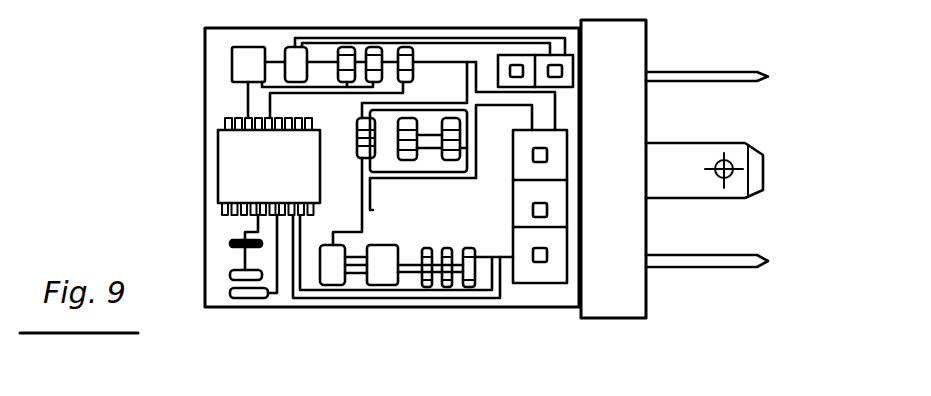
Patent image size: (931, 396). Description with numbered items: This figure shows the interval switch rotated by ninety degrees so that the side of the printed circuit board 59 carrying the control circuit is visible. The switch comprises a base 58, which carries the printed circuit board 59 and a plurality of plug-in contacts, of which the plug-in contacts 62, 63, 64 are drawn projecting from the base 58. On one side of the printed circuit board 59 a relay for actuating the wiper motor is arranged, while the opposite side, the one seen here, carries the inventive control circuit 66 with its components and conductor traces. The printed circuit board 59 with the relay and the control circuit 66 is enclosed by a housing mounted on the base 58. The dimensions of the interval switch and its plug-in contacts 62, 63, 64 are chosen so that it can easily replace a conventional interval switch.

The base 58 is at (603, 308).
The printed circuit board 59 is at (527, 303).
The plug-in contact 62 is at (766, 77).
The plug-in contact 63 is at (764, 259).
The plug-in contact 64 is at (765, 163).
The control circuit 66 is at (217, 68).